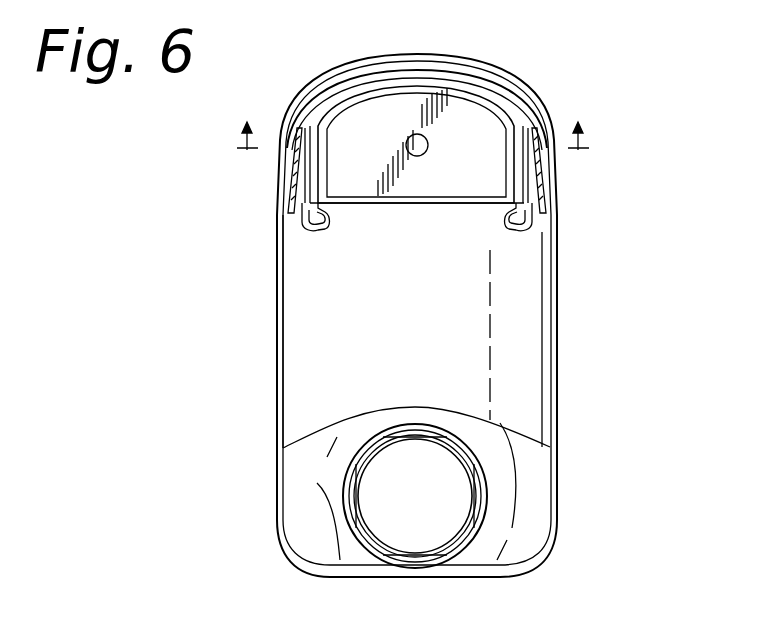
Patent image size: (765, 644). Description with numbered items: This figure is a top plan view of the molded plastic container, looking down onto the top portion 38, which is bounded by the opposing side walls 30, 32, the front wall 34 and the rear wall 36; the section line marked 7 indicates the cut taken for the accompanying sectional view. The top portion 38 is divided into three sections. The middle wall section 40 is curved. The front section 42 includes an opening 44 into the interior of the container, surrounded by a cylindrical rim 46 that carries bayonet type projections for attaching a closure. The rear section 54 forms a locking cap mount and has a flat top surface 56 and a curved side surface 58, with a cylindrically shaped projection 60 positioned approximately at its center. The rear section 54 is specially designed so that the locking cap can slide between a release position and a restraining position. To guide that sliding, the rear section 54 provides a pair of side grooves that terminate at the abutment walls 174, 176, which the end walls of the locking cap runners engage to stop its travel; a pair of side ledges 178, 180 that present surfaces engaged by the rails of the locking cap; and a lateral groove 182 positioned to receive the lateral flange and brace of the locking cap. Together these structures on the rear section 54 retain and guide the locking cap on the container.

The side wall 30 is at (277, 413).
The side wall 32 is at (557, 343).
The front wall 34 is at (357, 577).
The rear wall 36 is at (436, 60).
The top portion 38 is at (291, 362).
The middle wall section 40 is at (297, 302).
The front section 42 is at (338, 523).
The opening 44 is at (438, 511).
The cylindrical rim 46 is at (483, 493).
The rear section 54 is at (337, 187).
The flat top surface 56 is at (394, 134).
The curved side surface 58 is at (333, 97).
The cylindrically shaped projection 60 is at (430, 141).
The abutment wall 174 is at (299, 138).
The abutment wall 176 is at (537, 140).
The side ledge 178 is at (301, 210).
The side ledge 180 is at (529, 207).
The lateral groove 182 is at (398, 77).
The section line 7- 7 is at (413, 126).